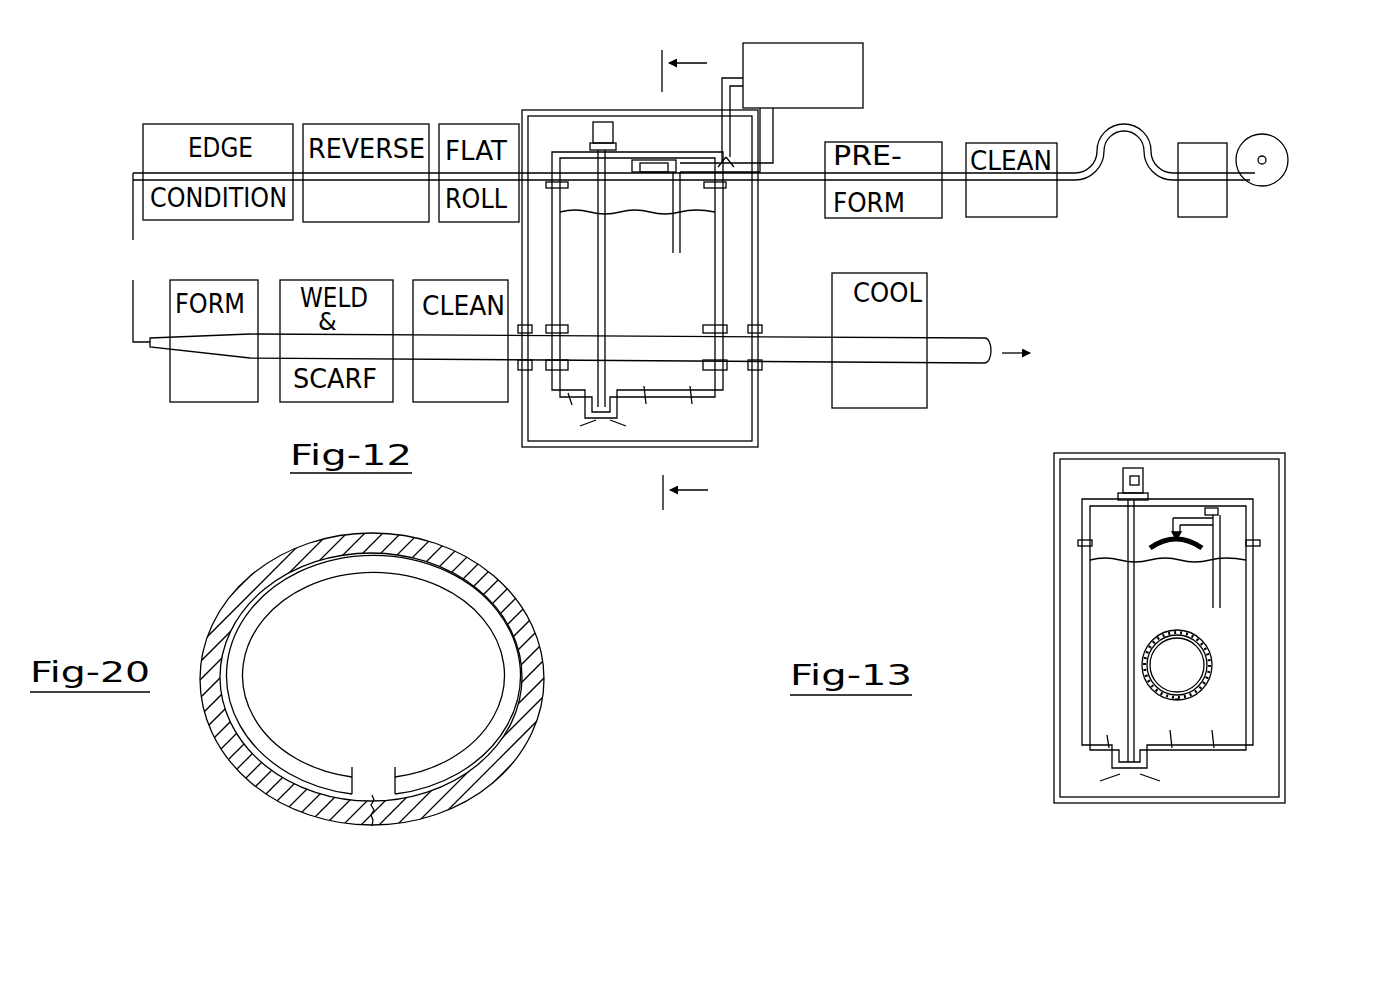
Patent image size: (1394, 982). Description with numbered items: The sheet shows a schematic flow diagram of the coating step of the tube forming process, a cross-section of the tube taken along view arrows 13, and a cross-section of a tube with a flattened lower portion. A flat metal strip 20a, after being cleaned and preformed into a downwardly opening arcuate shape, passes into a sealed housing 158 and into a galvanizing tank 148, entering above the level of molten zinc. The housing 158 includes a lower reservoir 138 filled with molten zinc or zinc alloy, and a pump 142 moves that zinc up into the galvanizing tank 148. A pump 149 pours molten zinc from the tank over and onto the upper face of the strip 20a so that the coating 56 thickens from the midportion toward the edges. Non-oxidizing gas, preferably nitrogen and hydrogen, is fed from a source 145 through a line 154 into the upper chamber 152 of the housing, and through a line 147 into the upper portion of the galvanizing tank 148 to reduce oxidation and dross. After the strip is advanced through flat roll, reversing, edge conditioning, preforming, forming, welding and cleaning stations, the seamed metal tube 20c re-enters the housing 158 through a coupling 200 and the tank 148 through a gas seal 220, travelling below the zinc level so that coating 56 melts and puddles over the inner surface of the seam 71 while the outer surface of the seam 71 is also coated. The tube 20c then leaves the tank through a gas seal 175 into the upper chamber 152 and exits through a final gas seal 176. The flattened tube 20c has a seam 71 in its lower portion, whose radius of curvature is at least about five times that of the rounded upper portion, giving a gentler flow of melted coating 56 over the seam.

In FIG. 12, the view arrows 13 is at (682, 277).
In FIG. 13, the metal strip 20a is at (1153, 528).
In FIG. 13, the seamed metal tube 20c is at (1212, 652).
In FIG. 20, the seamed metal tube 20c is at (256, 553).
In FIG. 13, the metal coating 56 is at (1212, 675).
In FIG. 20, the metal coating 56 is at (486, 608).
In FIG. 13, the seam 71 is at (1180, 700).
In FIG. 20, the seam 71 is at (373, 795).
In FIG. 12, the lower reservoir 138 is at (704, 426).
In FIG. 13, the lower reservoir 138 is at (1070, 767).
In FIG. 12, the pump 142 is at (592, 130).
In FIG. 13, the pump 142 is at (1118, 486).
In FIG. 12, the source of non-oxidizing gas 145 is at (864, 100).
In FIG. 12, the line 147 is at (772, 153).
In FIG. 12, the galvanizing tank 148 is at (740, 402).
In FIG. 13, the galvanizing tank 148 is at (1077, 665).
In FIG. 13, the pump 149 is at (1220, 588).
In FIG. 12, the upper chamber 152 is at (674, 148).
In FIG. 12, the line 154 is at (731, 77).
In FIG. 12, the sealed housing 158 is at (512, 431).
In FIG. 13, the sealed housing 158 is at (1043, 577).
In FIG. 12, the gas seal 175 is at (700, 320).
In FIG. 12, the final gas seal 176 is at (755, 322).
In FIG. 12, the coupling 200 is at (537, 325).
In FIG. 12, the gas seal 220 is at (567, 322).